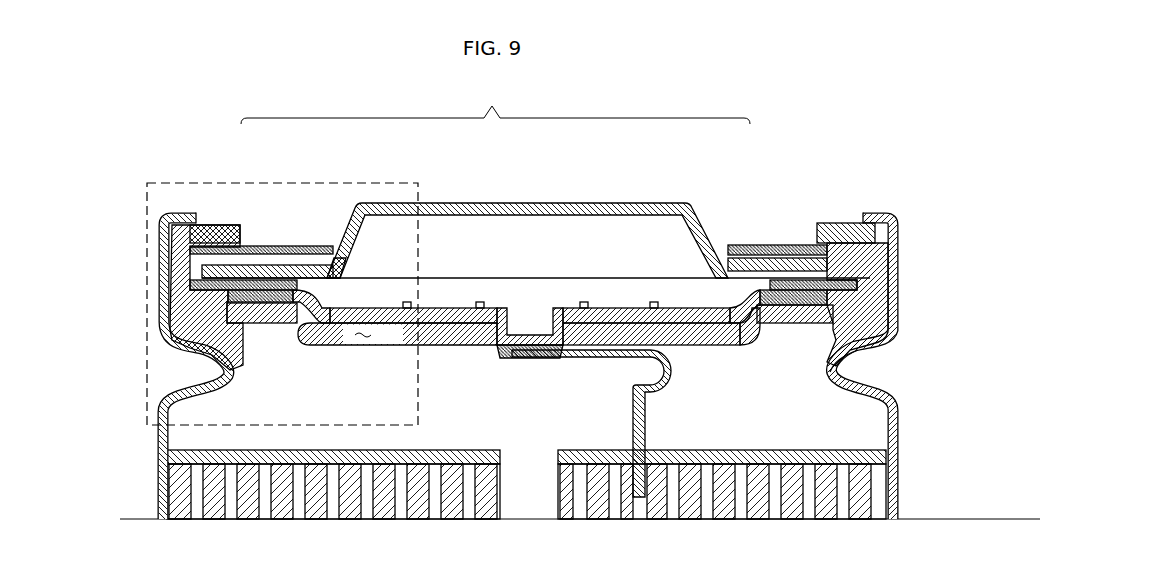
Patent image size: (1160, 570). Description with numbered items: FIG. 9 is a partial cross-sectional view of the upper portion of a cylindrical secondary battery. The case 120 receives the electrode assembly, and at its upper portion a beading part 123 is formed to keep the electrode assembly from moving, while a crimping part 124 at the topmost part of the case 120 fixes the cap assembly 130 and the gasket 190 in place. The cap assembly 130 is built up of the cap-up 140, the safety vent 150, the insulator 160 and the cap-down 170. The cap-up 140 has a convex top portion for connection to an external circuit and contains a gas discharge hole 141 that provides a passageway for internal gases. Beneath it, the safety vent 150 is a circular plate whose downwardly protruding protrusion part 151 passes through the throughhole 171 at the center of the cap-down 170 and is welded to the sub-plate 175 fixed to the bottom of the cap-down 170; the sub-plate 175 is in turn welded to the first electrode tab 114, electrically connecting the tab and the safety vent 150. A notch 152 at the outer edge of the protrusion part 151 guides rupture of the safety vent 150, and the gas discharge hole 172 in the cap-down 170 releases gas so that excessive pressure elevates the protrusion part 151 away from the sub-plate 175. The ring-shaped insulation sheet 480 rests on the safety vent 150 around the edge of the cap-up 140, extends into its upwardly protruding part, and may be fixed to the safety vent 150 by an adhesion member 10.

The adhesion member 10 is at (190, 252).
The first electrode tab 114 is at (645, 412).
The case 120 is at (916, 254).
The beading part 123 is at (848, 359).
The crimping part 124 is at (885, 215).
The cap assembly 130 is at (495, 100).
The cap-up 140 is at (633, 203).
The gas discharge hole 141 is at (348, 228).
The safety vent 150 is at (682, 308).
The protrusion part 151 is at (537, 332).
The notch 152 is at (404, 301).
The insulator 160 is at (793, 290).
The cap-down 170 is at (467, 343).
The throughhole 171 is at (603, 325).
The gas discharge hole 172 is at (296, 274).
The sub-plate 175 is at (436, 345).
The gasket 190 is at (850, 303).
The insulation sheet 480 is at (258, 245).